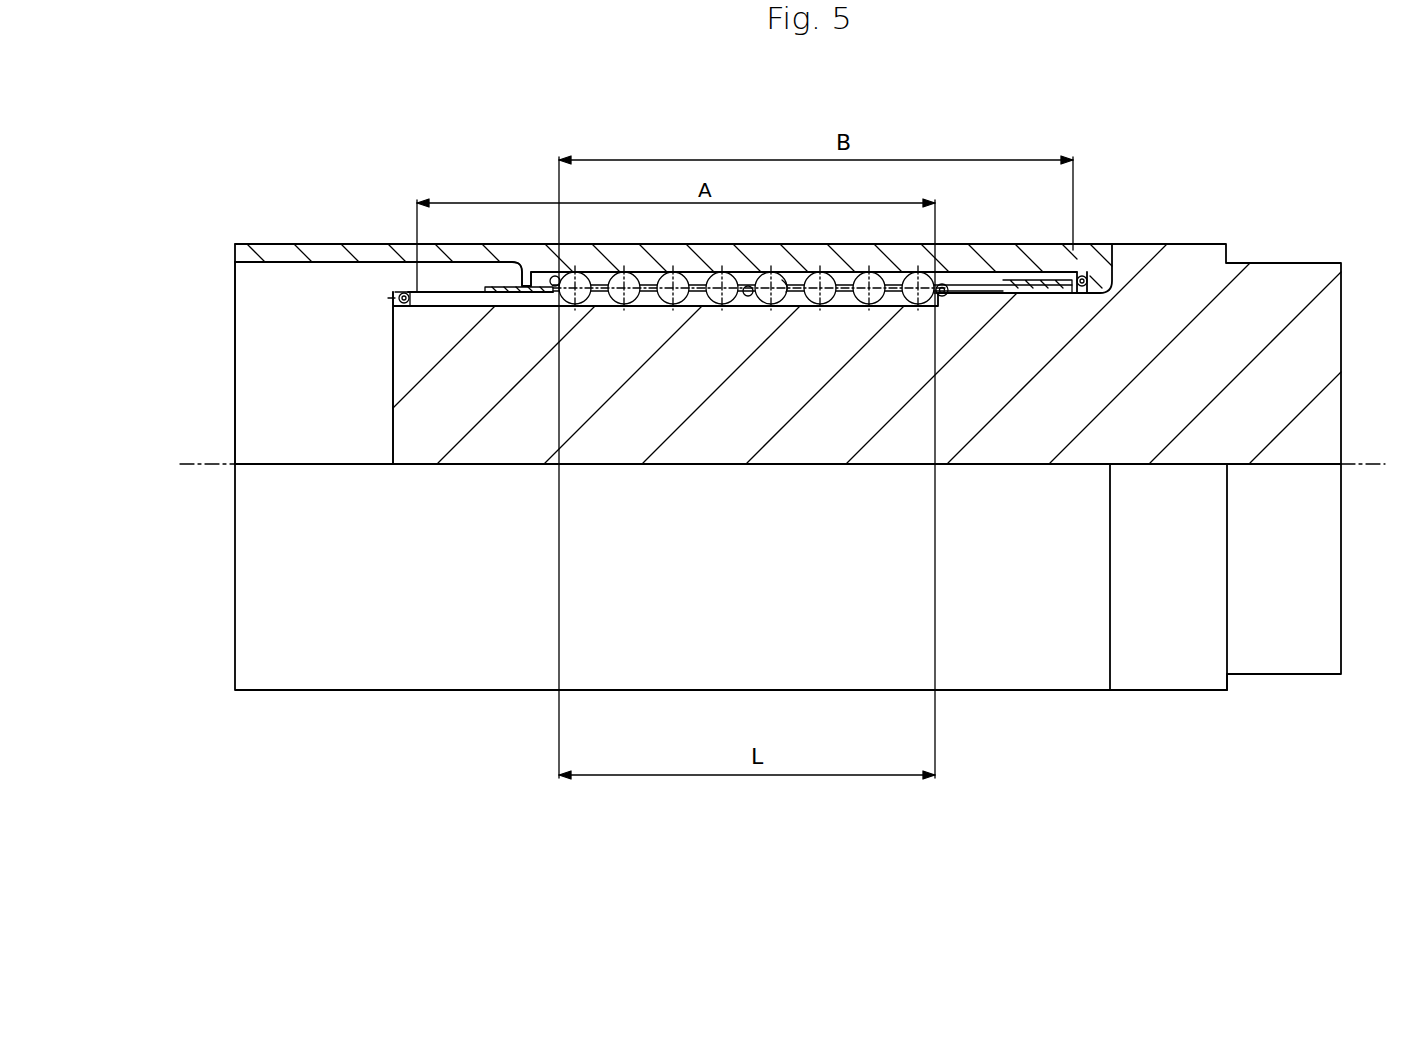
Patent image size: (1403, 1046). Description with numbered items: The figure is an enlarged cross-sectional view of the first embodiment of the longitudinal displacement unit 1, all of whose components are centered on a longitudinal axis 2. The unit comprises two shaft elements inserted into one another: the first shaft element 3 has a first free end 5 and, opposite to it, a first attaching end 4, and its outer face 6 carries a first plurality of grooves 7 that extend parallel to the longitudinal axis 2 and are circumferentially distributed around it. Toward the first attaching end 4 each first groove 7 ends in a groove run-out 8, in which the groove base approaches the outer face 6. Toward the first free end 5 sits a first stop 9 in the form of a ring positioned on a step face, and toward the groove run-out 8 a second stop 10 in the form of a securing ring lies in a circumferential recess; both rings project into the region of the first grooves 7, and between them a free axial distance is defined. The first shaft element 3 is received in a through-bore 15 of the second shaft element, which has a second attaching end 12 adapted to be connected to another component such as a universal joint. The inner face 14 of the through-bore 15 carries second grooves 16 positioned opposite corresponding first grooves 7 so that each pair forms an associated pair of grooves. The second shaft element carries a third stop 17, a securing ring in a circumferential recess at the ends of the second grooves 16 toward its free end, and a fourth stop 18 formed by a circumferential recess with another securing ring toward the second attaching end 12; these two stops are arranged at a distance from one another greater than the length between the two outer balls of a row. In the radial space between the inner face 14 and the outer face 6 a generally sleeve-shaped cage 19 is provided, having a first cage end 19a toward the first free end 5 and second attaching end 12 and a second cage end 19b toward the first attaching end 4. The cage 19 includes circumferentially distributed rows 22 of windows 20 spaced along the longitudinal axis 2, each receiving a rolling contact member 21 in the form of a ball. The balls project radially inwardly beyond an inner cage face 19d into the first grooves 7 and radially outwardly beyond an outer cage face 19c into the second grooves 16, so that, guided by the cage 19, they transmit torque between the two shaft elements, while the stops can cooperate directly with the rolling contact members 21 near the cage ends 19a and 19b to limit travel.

The longitudinal displacement unit 1 is at (916, 148).
The longitudinal axis 2 is at (231, 478).
The first shaft element 3 is at (708, 440).
The first attaching end 4 is at (1340, 270).
The first free end 5 is at (393, 308).
The outer face 6 is at (448, 262).
The first grooves 7 is at (522, 302).
The groove run-out 8 is at (955, 300).
The first stop 9 is at (400, 298).
The second stop 10 is at (946, 284).
The second attaching end 12 is at (232, 250).
The inner face 14 is at (1018, 292).
The through-bore 15 is at (262, 374).
The second grooves 16 is at (994, 252).
The third stop 17 is at (1086, 272).
The fourth stop 18 is at (537, 270).
The cage 19 is at (932, 313).
The first cage end 19a is at (487, 280).
The second cage end 19b is at (1025, 272).
The outer cage face 19c is at (726, 272).
The inner cage face 19d is at (751, 287).
The windows 20 is at (783, 280).
The rolling contact members 21 is at (760, 306).
The rows 22 is at (652, 320).